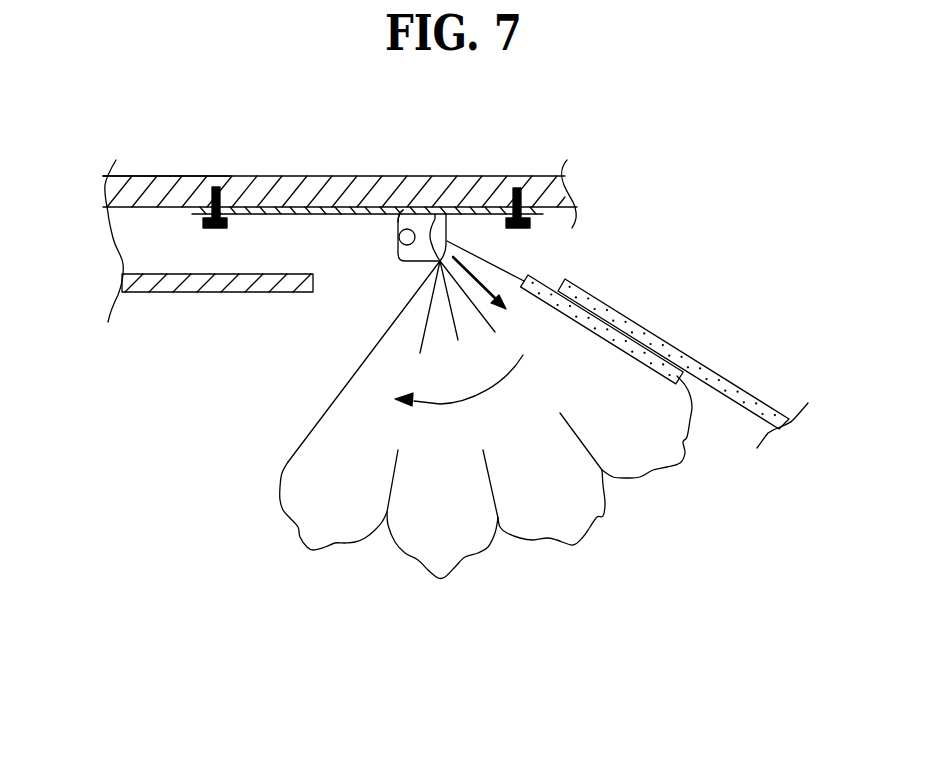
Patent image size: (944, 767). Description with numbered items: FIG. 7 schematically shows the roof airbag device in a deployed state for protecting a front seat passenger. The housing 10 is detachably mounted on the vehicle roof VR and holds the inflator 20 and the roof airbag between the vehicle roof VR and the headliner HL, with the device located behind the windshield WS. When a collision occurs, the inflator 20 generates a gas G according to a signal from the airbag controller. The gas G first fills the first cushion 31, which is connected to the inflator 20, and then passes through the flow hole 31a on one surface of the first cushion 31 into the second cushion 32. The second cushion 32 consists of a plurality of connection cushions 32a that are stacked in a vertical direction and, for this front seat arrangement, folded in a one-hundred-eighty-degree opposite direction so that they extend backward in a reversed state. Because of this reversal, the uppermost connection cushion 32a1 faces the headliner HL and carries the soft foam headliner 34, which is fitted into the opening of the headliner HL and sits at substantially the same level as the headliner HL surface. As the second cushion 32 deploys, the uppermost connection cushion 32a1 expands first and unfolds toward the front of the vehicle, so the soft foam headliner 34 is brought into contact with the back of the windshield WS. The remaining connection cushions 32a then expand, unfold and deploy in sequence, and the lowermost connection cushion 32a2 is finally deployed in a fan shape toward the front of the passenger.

The housing 10 is at (283, 205).
The inflator 20 is at (402, 215).
The first cushion 31 is at (398, 252).
The flow hole 31a is at (442, 212).
The second cushion 32 is at (533, 423).
The connection cushions 32a is at (605, 522).
The uppermost connection cushion 32a1 is at (688, 438).
The lowermost connection cushion 32a2 is at (343, 546).
The soft foam headliner 34 is at (645, 346).
The windshield WS is at (620, 285).
The vehicle roof VR is at (163, 192).
The headliner HL is at (201, 293).
The gas G is at (490, 296).